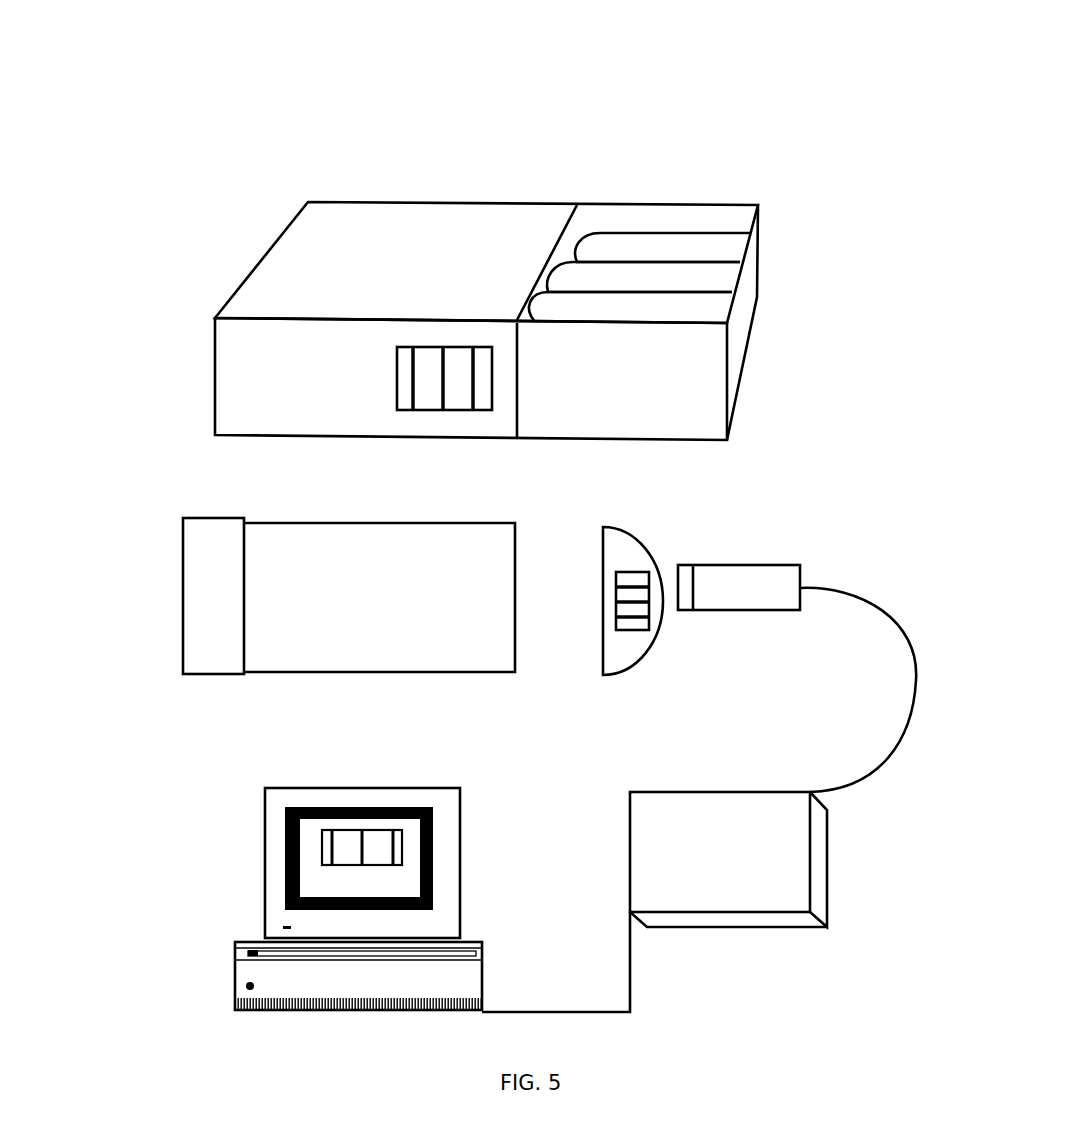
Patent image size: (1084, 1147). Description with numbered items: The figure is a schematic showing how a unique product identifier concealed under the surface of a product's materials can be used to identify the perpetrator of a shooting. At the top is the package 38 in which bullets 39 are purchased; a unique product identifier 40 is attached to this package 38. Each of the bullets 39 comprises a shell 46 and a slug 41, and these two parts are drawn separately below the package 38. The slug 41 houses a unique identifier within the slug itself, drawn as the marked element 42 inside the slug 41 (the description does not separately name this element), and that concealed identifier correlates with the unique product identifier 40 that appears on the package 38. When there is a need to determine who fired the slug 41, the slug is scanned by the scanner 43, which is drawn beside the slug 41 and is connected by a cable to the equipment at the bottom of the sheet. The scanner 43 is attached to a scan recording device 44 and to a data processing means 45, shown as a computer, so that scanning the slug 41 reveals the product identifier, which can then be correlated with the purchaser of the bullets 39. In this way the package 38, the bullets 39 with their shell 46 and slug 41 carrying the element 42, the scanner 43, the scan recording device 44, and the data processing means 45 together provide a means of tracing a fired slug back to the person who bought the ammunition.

The package 38 is at (493, 192).
The bullets 39 is at (708, 232).
The unique product identifier 40 is at (422, 345).
The slug 41 is at (642, 535).
The reader label 42 is at (654, 601).
The scanner 43 is at (803, 560).
The scan recording device 44 is at (743, 930).
The data processing means 45 is at (465, 940).
The shell 46 is at (181, 602).